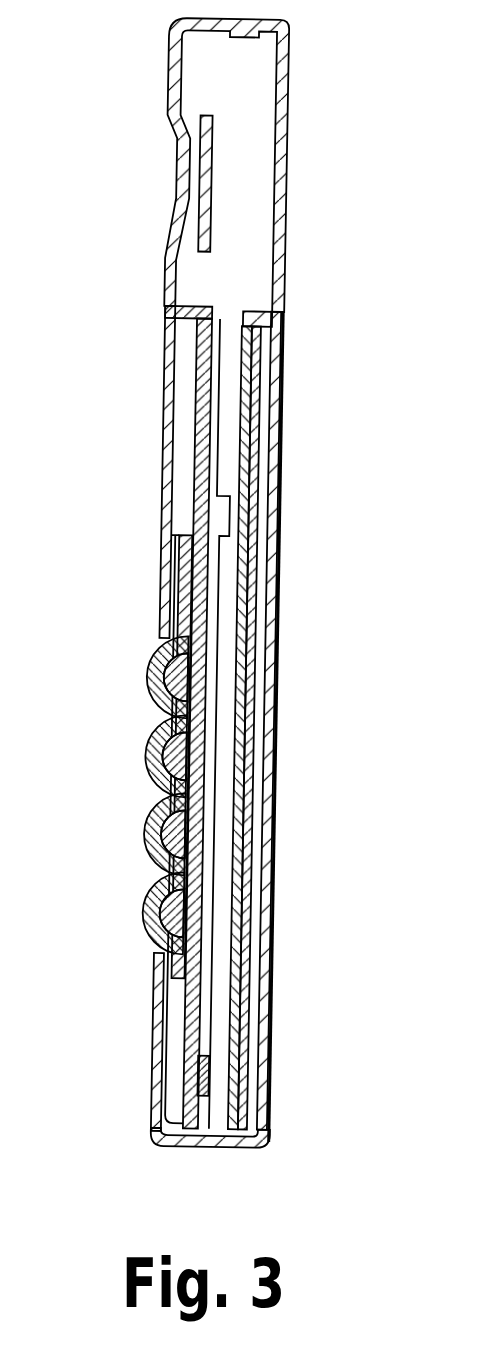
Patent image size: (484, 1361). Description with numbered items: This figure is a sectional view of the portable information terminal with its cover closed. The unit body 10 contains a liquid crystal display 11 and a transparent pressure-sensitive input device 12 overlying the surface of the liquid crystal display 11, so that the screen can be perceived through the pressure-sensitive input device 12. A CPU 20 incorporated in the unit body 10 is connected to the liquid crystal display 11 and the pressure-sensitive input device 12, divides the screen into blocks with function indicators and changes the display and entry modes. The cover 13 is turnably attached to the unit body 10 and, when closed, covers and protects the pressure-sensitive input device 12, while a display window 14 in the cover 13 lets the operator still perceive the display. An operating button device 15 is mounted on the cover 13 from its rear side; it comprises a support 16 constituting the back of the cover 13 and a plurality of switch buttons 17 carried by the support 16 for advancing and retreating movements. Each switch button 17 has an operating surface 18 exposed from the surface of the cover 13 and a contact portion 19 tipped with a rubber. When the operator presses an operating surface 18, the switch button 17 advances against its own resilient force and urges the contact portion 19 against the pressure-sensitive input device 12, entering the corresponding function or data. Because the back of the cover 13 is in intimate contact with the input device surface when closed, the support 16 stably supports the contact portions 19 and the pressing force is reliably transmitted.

The unit body 10 is at (298, 152).
The liquid crystal display 11 is at (208, 449).
The pressure-sensitive input device 12 is at (197, 392).
The cover 13 is at (153, 1062).
The display window 14 is at (165, 515).
The operating button device 15 is at (121, 833).
The support 16 is at (190, 993).
The switch button 17 is at (138, 642).
The operating surface 18 is at (172, 688).
The contact portion 19 is at (204, 672).
The CPU 20 is at (224, 583).